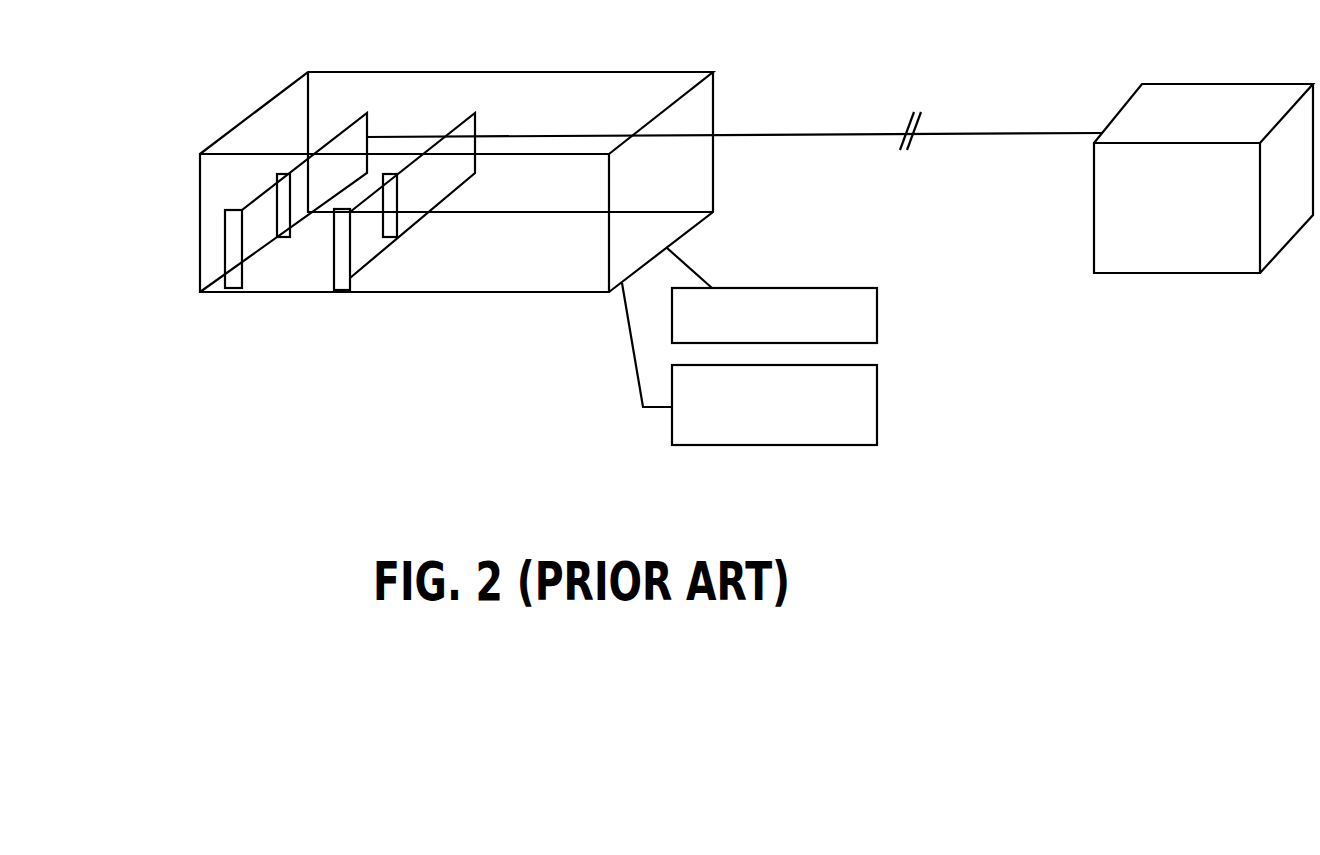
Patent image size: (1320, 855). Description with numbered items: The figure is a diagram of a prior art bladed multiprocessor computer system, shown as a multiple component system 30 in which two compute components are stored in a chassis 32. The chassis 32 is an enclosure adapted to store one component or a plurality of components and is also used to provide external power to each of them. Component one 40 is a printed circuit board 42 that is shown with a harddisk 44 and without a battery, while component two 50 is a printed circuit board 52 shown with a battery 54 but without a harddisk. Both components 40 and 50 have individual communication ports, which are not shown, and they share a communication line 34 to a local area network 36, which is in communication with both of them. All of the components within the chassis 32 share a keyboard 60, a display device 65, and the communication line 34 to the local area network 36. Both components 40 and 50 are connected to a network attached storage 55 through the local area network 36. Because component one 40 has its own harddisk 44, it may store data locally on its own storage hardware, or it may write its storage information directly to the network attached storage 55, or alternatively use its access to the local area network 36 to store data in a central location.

The multiple component system 30 is at (550, 380).
The chassis 32 is at (441, 72).
The communication line 34 is at (601, 135).
The local area network 36 is at (958, 103).
The Component 1 40 is at (233, 281).
The printed circuit board 42 is at (263, 256).
The hard disk 44 is at (268, 184).
The Component 2 50 is at (343, 282).
The printed circuit board 52 is at (367, 258).
The battery 54 is at (393, 240).
The network attached storage 55 is at (1140, 275).
The keyboard 60 is at (813, 288).
The display device 65 is at (877, 394).